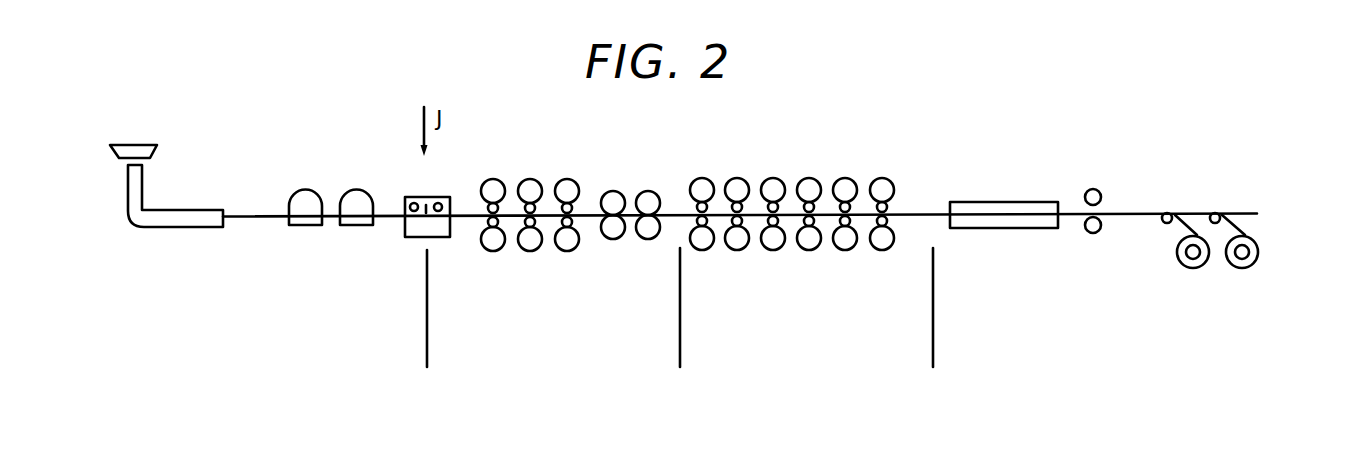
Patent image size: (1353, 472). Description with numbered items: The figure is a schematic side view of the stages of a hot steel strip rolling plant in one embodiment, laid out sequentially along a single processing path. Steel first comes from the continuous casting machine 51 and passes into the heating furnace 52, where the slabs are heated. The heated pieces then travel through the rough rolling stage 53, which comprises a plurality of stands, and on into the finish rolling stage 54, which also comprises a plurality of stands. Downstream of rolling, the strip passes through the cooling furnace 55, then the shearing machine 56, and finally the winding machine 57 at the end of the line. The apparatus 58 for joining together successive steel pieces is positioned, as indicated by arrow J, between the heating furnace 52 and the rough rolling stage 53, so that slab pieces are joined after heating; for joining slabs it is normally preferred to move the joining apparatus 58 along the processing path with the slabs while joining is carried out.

The continuous casting machine 51 is at (146, 234).
The heating furnace 52 is at (334, 181).
The rough rolling stage 53 is at (569, 166).
The finish rolling stage 54 is at (827, 166).
The cooling furnace 55 is at (1008, 202).
The shearing machine 56 is at (1101, 191).
The winding machine 57 is at (1227, 275).
The apparatus for joining together successive steel pieces 58 is at (412, 237).